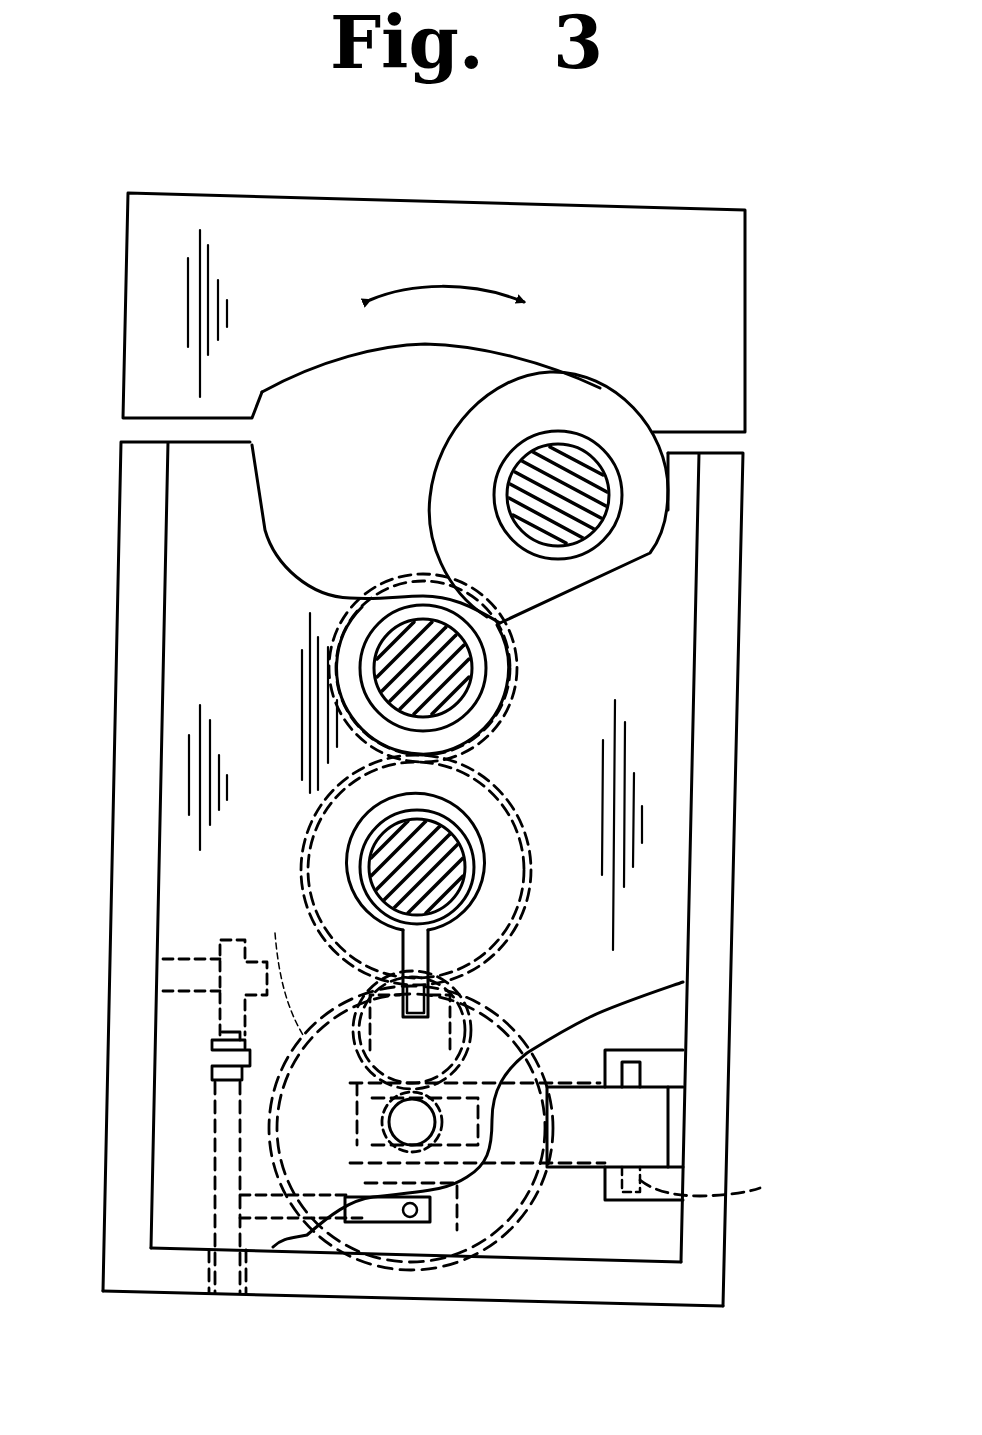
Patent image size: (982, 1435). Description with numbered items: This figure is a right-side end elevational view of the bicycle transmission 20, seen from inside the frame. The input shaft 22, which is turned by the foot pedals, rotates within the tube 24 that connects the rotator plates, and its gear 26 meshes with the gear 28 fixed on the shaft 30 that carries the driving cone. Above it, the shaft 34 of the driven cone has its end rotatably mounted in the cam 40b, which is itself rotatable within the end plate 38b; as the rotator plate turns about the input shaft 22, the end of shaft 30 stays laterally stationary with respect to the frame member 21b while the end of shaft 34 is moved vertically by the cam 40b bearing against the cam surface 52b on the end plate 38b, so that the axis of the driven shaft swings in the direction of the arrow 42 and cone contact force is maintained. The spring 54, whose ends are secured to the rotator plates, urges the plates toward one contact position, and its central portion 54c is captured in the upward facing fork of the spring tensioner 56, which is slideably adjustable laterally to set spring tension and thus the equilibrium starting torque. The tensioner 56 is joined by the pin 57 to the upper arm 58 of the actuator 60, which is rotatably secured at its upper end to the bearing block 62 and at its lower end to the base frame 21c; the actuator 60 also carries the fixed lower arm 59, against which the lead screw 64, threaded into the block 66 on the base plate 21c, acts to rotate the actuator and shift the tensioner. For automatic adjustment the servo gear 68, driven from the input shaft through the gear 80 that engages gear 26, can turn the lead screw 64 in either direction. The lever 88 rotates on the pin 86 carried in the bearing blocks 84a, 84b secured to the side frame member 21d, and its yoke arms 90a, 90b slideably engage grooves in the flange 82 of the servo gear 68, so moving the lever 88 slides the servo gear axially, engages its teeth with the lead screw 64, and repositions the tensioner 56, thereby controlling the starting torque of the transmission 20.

The bicycle transmission 20 is at (96, 704).
The frame member 21b is at (195, 558).
The base frame 21c is at (422, 1288).
The side frame member 21d is at (727, 790).
The input shaft 22 is at (443, 888).
The tube 24 is at (363, 838).
The gear 26 is at (523, 838).
The gear 28 is at (512, 643).
The shaft 30 is at (447, 673).
The shaft 34 is at (567, 463).
The end plate 38b is at (127, 232).
The cam 40b is at (427, 465).
The arrow 42 is at (423, 287).
The cam surface 52b is at (420, 347).
The spring 54 is at (458, 822).
The central portion 54c is at (417, 972).
The spring tensioner 56 is at (282, 969).
The pin 57 is at (280, 1143).
The upper arm 58 is at (213, 1060).
The lower arm 59 is at (247, 1172).
The actuator 60 is at (190, 1187).
The bearing block 62 is at (190, 962).
The lead screw 64 is at (412, 1222).
The block 66 is at (473, 1228).
The servo gear 68 is at (335, 1010).
The gear 80 is at (473, 1045).
The flange 82 is at (518, 1210).
The bearing block 84a is at (657, 1072).
The bearing block 84b is at (622, 1207).
The pin 86 is at (690, 1196).
The lever 88 is at (606, 1145).
The upper arm 90a is at (382, 1117).
The lower arm 90b is at (358, 1181).